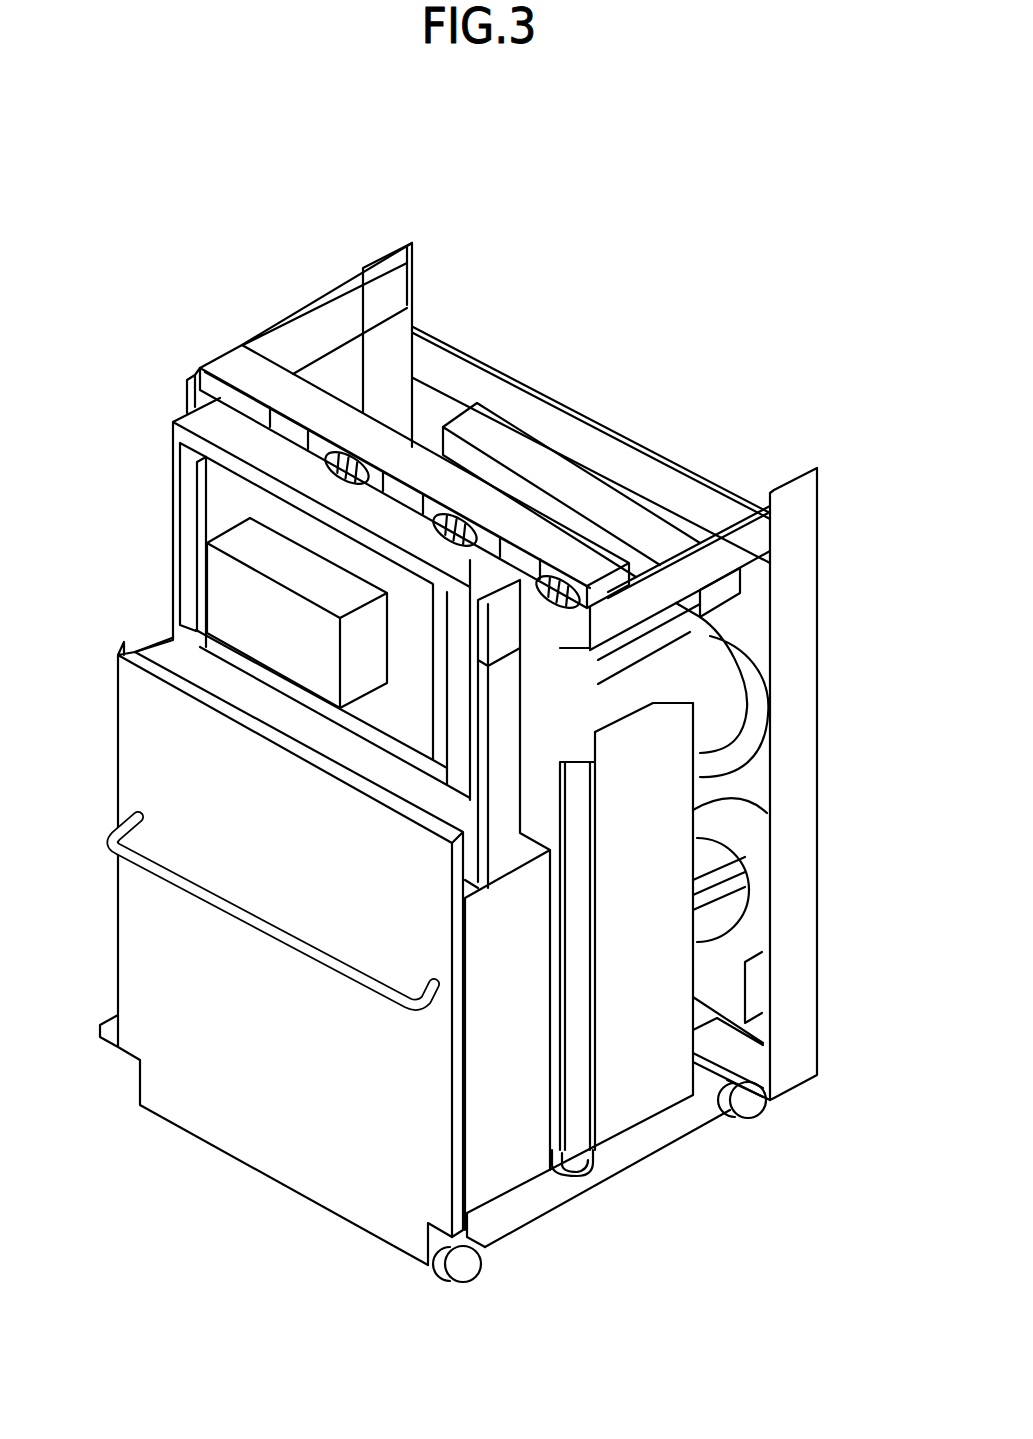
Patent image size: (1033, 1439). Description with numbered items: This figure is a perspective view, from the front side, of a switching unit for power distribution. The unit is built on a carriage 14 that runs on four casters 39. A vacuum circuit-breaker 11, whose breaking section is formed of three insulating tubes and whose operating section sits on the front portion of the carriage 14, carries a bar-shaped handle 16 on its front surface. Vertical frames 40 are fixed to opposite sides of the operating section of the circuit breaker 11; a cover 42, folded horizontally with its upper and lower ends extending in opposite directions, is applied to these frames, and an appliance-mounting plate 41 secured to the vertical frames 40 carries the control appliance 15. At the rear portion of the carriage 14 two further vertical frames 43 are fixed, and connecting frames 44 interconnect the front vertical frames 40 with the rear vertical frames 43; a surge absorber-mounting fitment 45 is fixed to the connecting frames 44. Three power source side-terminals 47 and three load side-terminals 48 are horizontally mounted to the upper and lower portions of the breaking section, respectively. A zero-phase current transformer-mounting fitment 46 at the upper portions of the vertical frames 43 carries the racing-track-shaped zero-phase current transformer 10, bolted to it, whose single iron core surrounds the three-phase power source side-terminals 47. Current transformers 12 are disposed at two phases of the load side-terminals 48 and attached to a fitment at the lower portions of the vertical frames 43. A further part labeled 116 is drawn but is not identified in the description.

The zero-phase current transformer 10 is at (502, 425).
The vacuum circuit-breaker 11 is at (132, 937).
The current transformers 12 is at (732, 988).
The carriage 14 is at (601, 1170).
The control appliance 15 is at (213, 595).
The handle 16 is at (262, 930).
The casters 39 is at (465, 1277).
The vertical frames 40 is at (500, 865).
The appliance-mounting plate 41 is at (204, 512).
The cover 42 is at (182, 434).
The vertical frames 43 is at (414, 253).
The connecting frames 44 is at (304, 322).
The surge absorber-mounting fitment 45 is at (233, 358).
The zero-phase current transformer-mounting fitment 46 is at (588, 443).
The power source side-terminals 47 is at (727, 662).
The load side-terminals 48 is at (718, 873).
The base rail 116 is at (517, 1163).